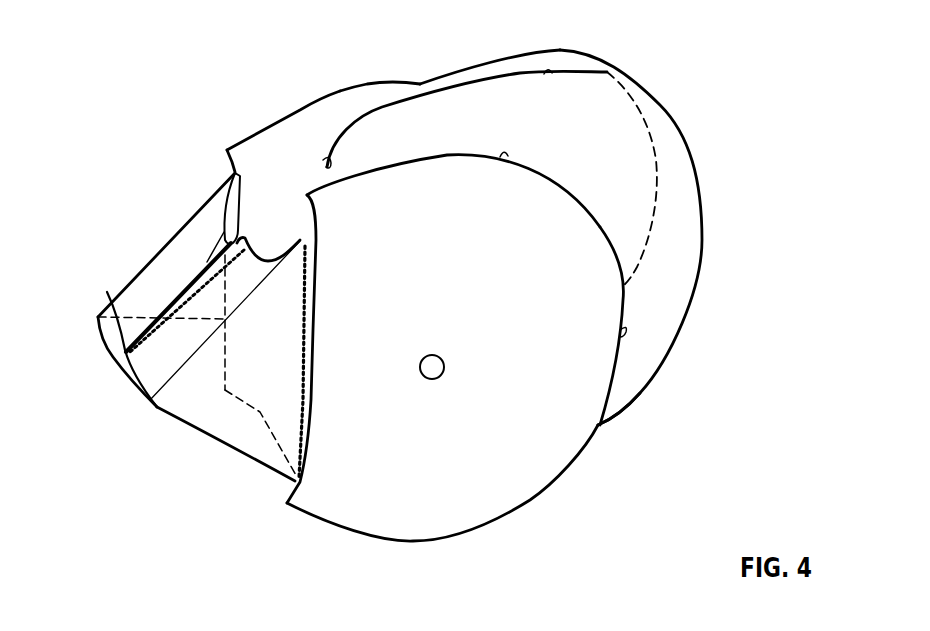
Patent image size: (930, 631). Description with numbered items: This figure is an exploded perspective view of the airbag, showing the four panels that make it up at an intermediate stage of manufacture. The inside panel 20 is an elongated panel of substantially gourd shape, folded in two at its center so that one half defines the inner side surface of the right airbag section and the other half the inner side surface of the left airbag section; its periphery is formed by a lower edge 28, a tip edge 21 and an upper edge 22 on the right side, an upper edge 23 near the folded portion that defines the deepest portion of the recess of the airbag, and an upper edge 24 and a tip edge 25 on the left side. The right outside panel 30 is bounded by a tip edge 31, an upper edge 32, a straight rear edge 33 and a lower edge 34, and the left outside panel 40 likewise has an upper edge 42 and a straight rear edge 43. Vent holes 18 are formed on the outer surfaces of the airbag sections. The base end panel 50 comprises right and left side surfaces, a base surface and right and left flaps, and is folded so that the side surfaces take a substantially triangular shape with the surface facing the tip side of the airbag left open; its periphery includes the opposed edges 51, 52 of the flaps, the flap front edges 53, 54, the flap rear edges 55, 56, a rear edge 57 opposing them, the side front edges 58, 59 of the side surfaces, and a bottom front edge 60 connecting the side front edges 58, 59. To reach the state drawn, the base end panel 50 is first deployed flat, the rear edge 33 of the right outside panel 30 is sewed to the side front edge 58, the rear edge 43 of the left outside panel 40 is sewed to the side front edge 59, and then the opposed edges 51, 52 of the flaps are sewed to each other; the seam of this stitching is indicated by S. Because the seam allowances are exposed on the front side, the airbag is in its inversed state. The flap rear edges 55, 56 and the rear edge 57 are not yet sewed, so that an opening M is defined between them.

The vent hole 18 is at (444, 364).
The inside panel 20 is at (673, 237).
The tip edge 21 is at (703, 236).
The upper edge 22 is at (549, 74).
The upper edge 23 is at (324, 164).
The upper edge 24 is at (490, 62).
The tip edge 25 is at (655, 184).
The lower edge 28 is at (632, 402).
The right outside panel 30 is at (473, 375).
The tip edge 31 is at (620, 337).
The upper edge 32 is at (504, 158).
The rear edge 33 is at (315, 334).
The lower edge 34 is at (415, 543).
The left outside panel 40 is at (292, 95).
The upper edge 42 is at (284, 121).
The rear edge 43 is at (226, 153).
The base end panel 50 is at (182, 345).
The opposed edge 51 is at (194, 283).
The opposed edge 52 is at (228, 280).
The flap front edge 53 is at (266, 258).
The flap front edge 54 is at (240, 210).
The flap rear edge 55 is at (137, 378).
The flap rear edge 56 is at (108, 300).
The rear edge 57 is at (121, 378).
The side front edge 58 is at (302, 320).
The side front edge 59 is at (232, 176).
The bottom front edge 60 is at (274, 412).
The opening M is at (116, 364).
The seam S is at (153, 333).